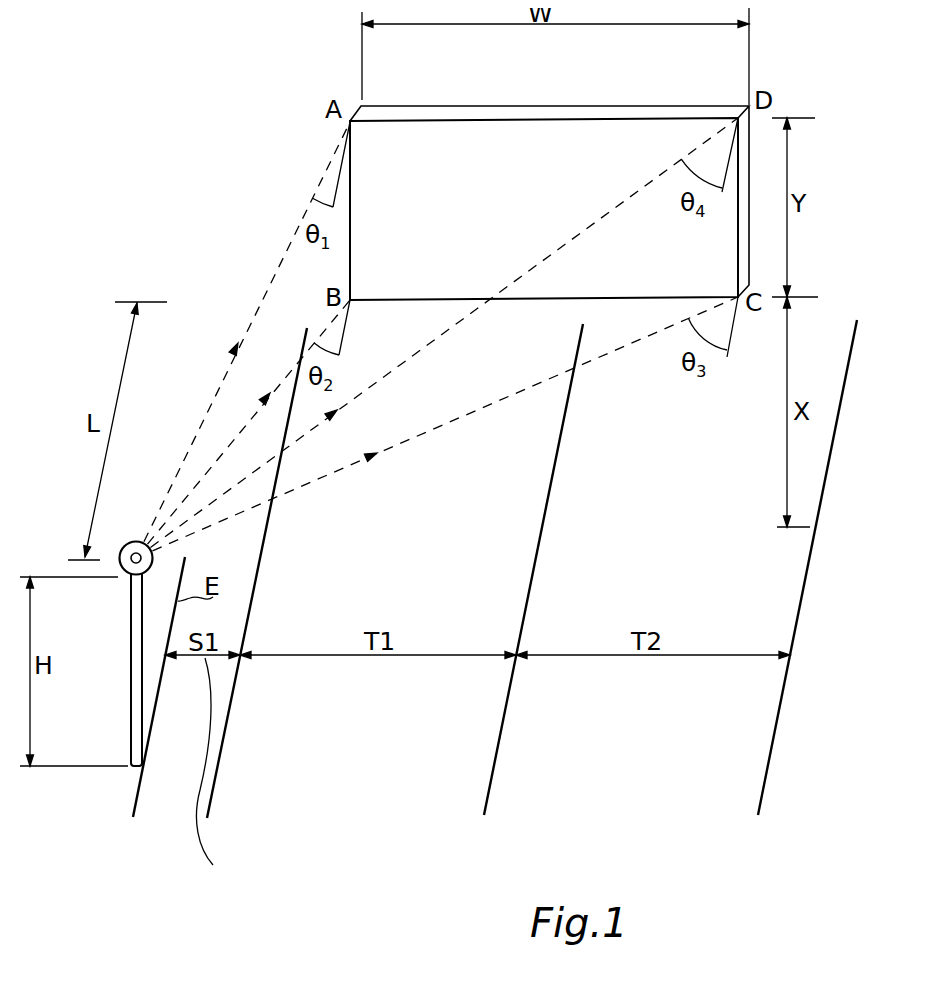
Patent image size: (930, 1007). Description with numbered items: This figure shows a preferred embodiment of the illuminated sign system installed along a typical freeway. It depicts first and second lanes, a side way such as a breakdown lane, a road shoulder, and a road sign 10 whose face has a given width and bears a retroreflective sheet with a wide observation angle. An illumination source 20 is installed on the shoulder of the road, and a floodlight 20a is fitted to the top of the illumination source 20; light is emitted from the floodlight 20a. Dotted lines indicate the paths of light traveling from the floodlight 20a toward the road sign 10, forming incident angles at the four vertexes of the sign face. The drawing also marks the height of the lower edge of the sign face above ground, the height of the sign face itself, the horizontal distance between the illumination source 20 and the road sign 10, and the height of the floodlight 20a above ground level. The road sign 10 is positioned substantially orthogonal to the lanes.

The road sign 10 is at (598, 140).
The illumination source 20 is at (130, 616).
The floodlight 20a is at (130, 541).